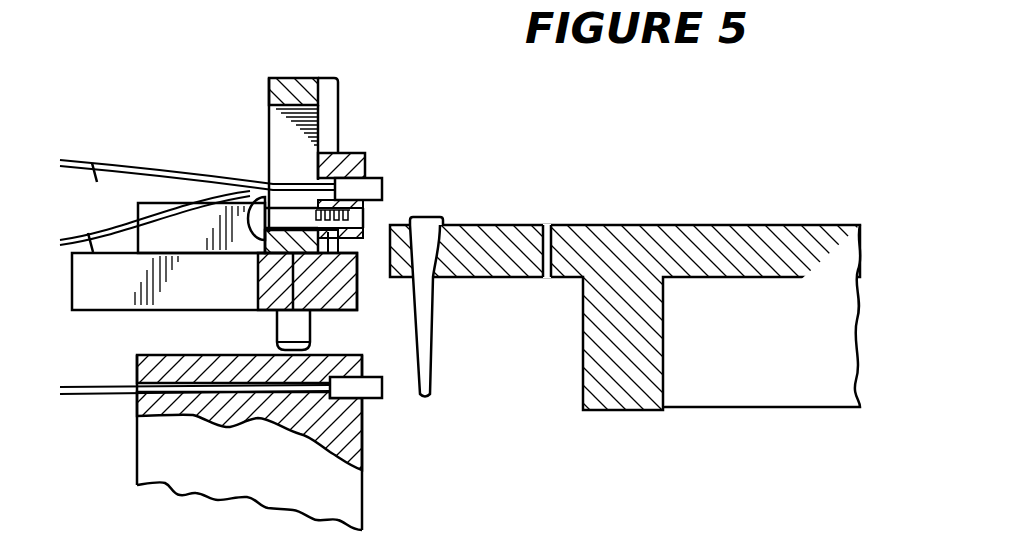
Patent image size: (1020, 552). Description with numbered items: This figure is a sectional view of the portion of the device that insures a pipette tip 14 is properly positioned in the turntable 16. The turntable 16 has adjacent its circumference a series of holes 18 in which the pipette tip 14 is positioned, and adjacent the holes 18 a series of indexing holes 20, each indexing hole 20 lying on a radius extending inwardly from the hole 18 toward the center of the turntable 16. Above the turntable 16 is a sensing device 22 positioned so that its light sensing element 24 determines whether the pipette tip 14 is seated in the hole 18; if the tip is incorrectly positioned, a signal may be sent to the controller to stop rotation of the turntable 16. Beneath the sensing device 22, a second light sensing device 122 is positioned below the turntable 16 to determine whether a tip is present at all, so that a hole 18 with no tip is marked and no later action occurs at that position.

The pipette tip 14 is at (426, 308).
The turntable 16 is at (693, 240).
The hole 18 is at (436, 250).
The indexing hole 20 is at (543, 225).
The sensing device 22 is at (363, 90).
The light sensing element 24 is at (367, 186).
The second light sensing device 122 is at (400, 425).